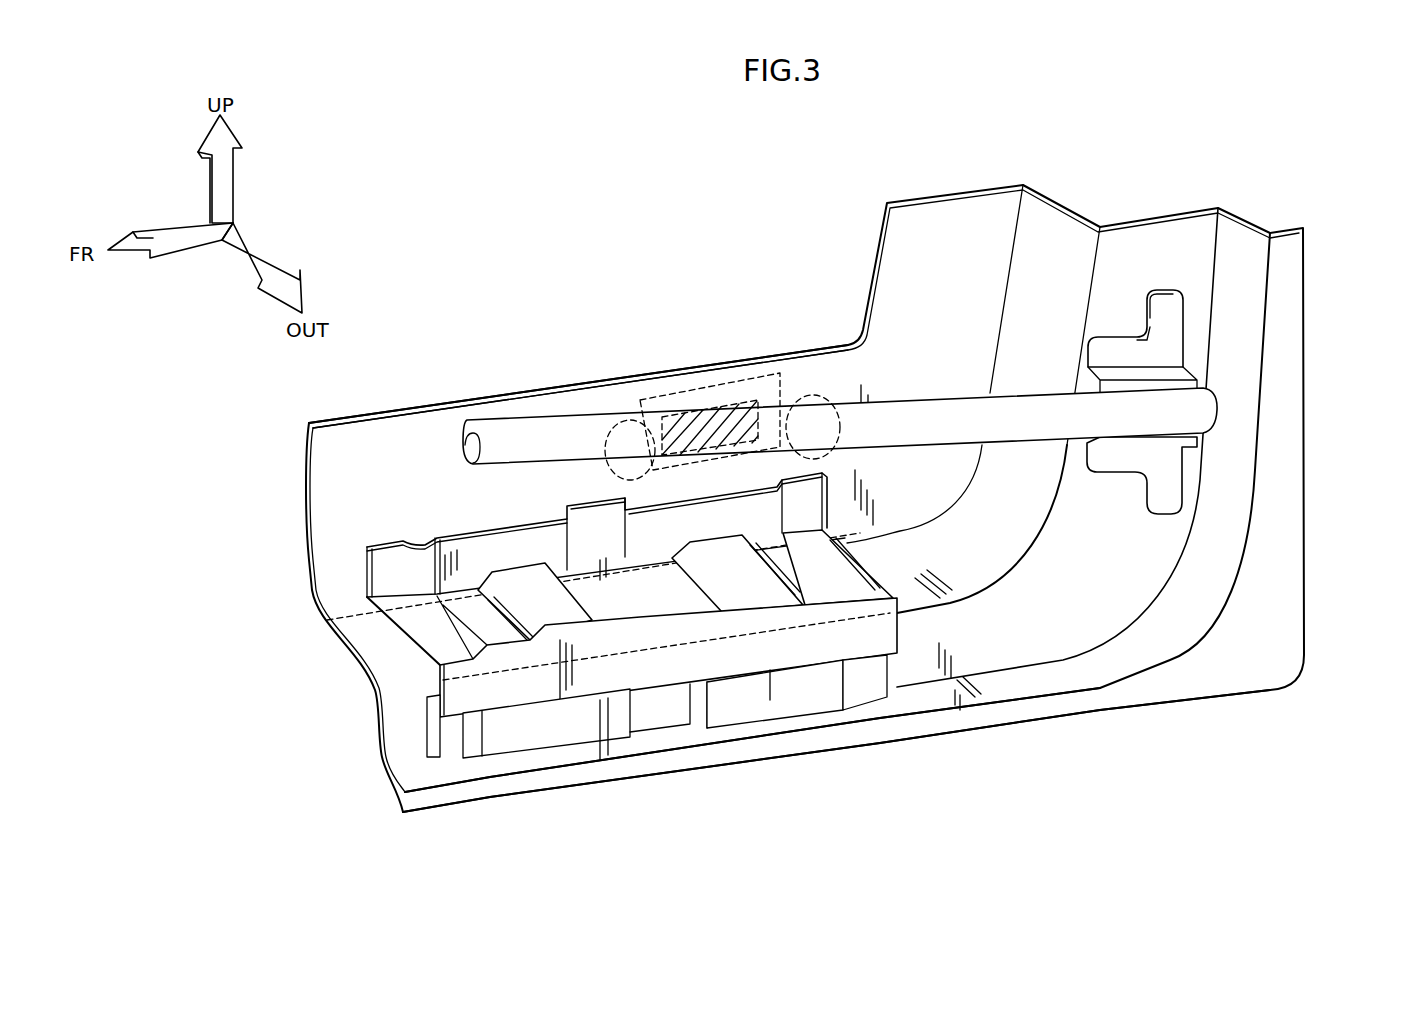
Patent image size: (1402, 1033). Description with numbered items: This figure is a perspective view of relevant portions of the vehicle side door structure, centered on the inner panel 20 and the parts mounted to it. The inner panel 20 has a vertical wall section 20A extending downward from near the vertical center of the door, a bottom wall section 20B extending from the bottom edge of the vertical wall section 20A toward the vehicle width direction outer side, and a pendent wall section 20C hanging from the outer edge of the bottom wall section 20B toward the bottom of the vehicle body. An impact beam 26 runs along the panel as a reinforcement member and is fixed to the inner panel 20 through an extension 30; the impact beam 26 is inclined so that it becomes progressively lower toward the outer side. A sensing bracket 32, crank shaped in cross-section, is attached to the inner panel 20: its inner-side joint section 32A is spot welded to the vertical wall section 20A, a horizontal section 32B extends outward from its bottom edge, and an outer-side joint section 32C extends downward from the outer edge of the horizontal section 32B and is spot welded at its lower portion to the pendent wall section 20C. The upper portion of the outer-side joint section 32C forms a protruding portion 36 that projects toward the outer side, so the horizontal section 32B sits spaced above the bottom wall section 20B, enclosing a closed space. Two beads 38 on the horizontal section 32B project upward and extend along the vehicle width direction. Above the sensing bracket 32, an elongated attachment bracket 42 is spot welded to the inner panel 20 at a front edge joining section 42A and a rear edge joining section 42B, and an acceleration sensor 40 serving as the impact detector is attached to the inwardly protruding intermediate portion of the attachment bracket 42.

The inner panel 20 is at (1304, 515).
The vertical wall section 20A is at (303, 478).
The bottom wall section 20B is at (365, 688).
The pendent wall section 20C is at (917, 663).
The impact beam 26 is at (505, 415).
The extension 30 is at (1147, 505).
The sensing bracket 32 is at (407, 730).
The inner-side joint section 32A is at (353, 552).
The horizontal section 32B is at (390, 612).
The outer-side joint section 32C is at (777, 707).
The protruding portion 36 is at (510, 700).
The beads 38 is at (533, 573).
The acceleration sensor 40 is at (683, 403).
The attachment bracket 42 is at (748, 373).
The front edge joining section 42A is at (617, 427).
The rear edge joining section 42B is at (810, 390).